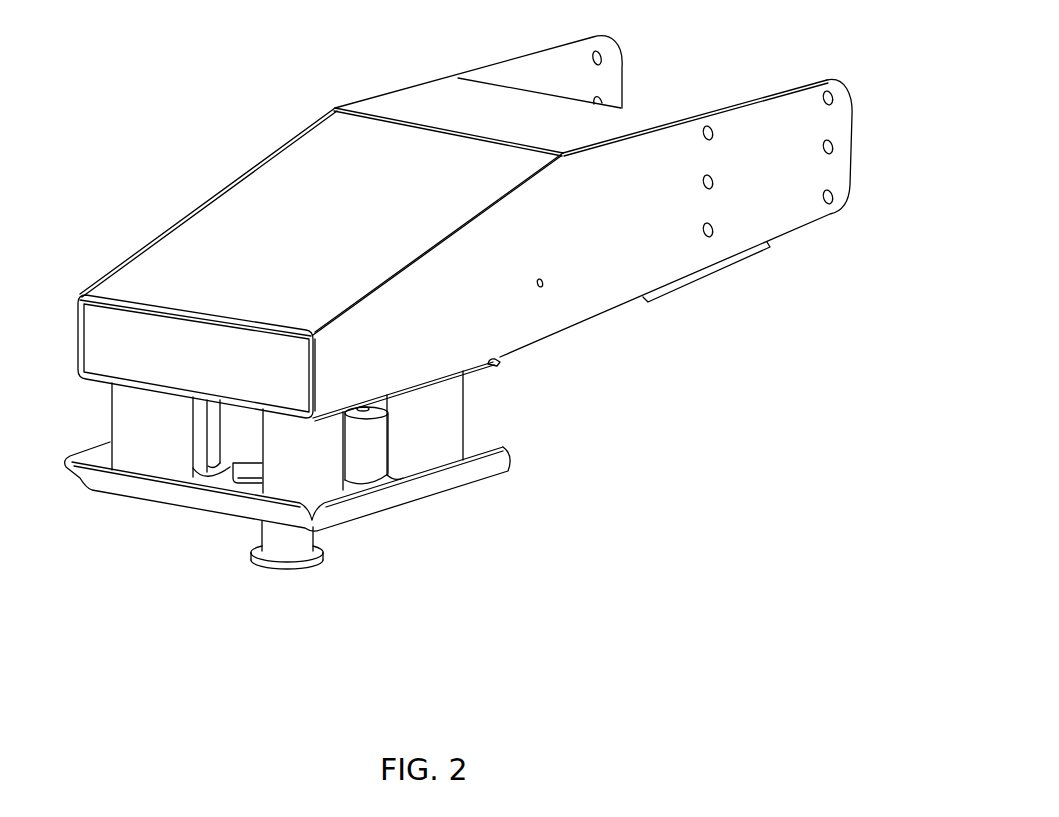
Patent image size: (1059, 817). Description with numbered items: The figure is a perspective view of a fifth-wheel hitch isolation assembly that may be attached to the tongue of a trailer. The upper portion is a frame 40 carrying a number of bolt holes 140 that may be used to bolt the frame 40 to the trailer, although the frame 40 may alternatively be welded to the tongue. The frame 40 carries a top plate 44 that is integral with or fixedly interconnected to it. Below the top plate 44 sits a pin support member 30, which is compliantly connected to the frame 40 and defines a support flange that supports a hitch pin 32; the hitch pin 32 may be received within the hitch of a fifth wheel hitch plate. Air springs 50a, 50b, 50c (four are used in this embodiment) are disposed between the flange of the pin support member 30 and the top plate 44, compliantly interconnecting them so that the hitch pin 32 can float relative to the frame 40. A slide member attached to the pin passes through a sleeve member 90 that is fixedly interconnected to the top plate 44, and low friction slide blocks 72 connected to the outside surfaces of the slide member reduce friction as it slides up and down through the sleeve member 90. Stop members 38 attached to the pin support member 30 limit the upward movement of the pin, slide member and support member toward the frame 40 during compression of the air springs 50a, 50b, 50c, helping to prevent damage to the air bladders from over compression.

The pin support member 30 is at (487, 468).
The hitch pin 32 is at (292, 538).
The stop member 38 is at (202, 461).
The frame 40 is at (621, 198).
The top plate 44 is at (497, 363).
The air spring 50a is at (148, 435).
The air spring 50b is at (293, 462).
The air spring 50c is at (435, 432).
The slide block 72 is at (247, 472).
The sleeve member 90 is at (238, 437).
The bolt holes 140 is at (828, 197).